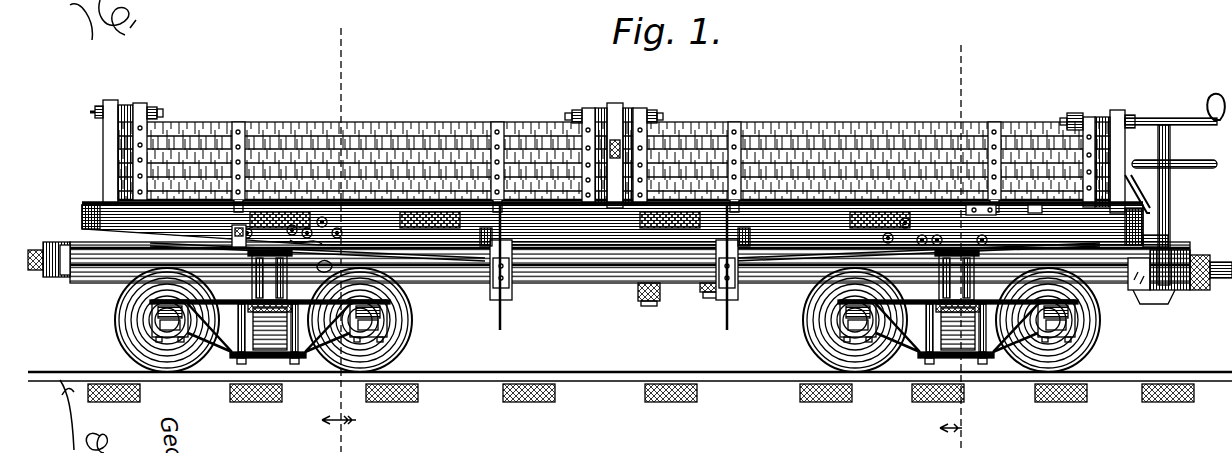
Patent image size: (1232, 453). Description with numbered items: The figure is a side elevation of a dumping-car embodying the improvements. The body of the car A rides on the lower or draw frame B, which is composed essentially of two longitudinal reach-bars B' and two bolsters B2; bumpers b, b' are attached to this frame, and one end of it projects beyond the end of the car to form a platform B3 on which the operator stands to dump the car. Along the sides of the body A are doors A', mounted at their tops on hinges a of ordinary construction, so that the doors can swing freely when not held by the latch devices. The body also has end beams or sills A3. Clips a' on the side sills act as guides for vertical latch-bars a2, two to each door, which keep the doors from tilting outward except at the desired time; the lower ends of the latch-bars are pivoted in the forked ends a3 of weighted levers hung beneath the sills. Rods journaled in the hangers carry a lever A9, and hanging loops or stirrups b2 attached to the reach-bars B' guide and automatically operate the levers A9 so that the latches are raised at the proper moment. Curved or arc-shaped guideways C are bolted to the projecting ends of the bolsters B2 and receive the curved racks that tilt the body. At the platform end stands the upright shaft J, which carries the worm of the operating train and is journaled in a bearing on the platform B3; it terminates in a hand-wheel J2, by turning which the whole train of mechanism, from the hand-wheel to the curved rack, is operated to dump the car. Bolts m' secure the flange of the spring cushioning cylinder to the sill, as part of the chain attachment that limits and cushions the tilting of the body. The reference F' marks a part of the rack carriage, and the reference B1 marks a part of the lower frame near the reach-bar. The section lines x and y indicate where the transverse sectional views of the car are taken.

The body of the car A is at (615, 149).
The hinges a is at (612, 149).
The clips a' is at (603, 167).
The latch-bars a2 is at (712, 246).
The forked ends a3 is at (232, 232).
The doors A' is at (612, 224).
The end beams or sills A3 is at (1150, 231).
The lever A9 is at (621, 267).
The lower or draw frame B is at (630, 270).
The reach-bars B' is at (798, 307).
The beam plate B1 is at (378, 242).
The bolsters B2 is at (607, 320).
The platform B3 is at (1180, 245).
The bumper b is at (49, 270).
The bumper b' is at (1182, 279).
The hanging loops or stirrups b2 is at (610, 272).
The curved or arc-shaped guideways C is at (252, 284).
The bracket plate F' is at (954, 213).
The upright shaft J is at (1171, 205).
The hand-wheel J2 is at (1175, 109).
The bolts m' is at (614, 187).
The section line x x is at (957, 240).
The section line y y is at (339, 234).